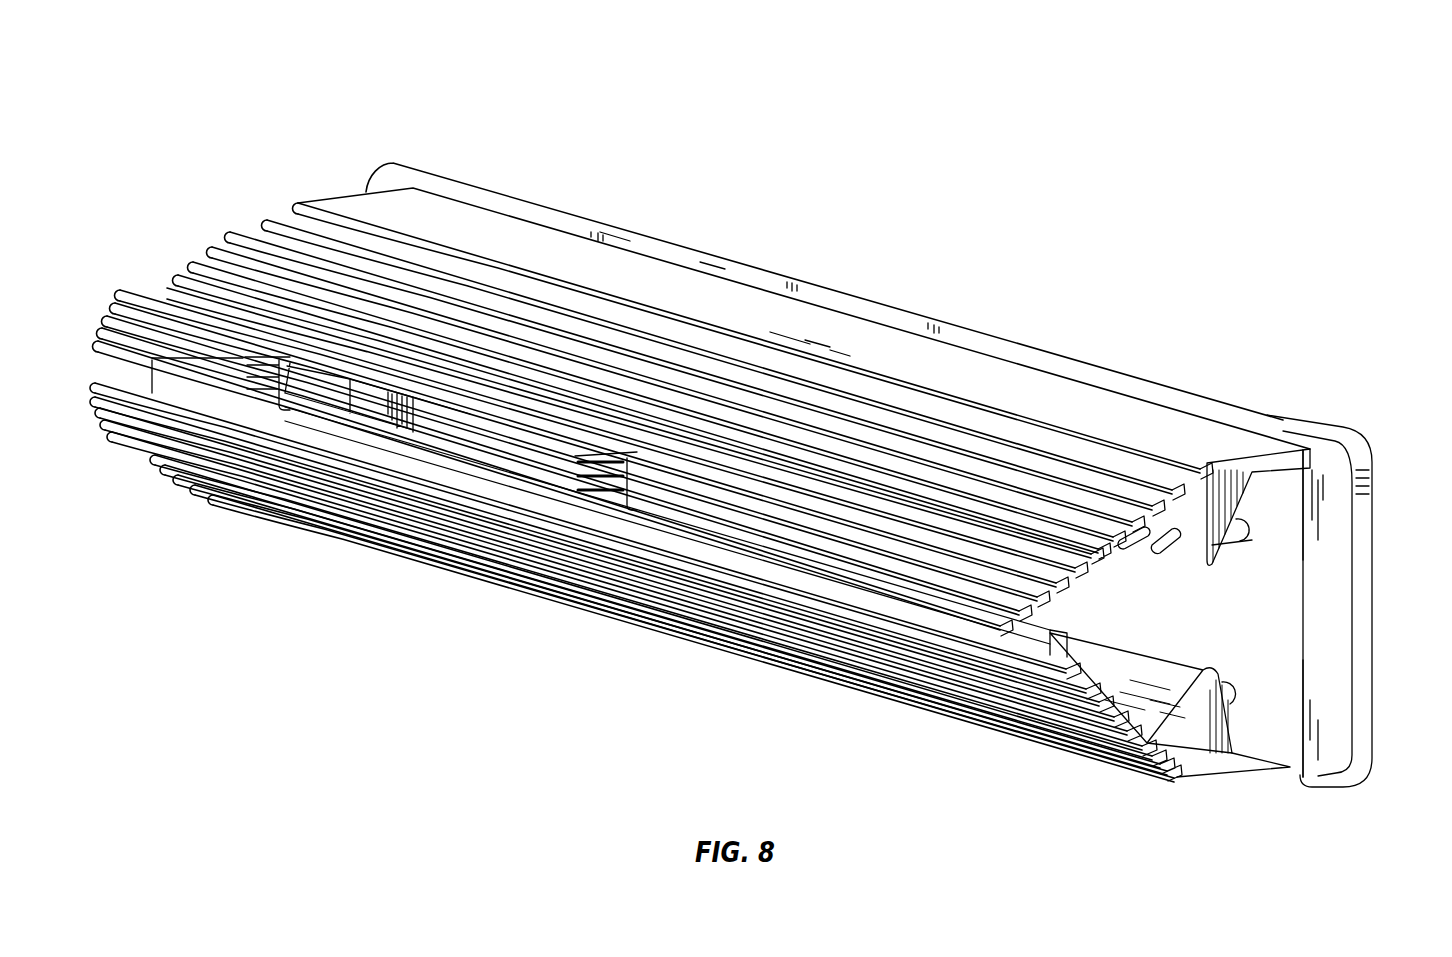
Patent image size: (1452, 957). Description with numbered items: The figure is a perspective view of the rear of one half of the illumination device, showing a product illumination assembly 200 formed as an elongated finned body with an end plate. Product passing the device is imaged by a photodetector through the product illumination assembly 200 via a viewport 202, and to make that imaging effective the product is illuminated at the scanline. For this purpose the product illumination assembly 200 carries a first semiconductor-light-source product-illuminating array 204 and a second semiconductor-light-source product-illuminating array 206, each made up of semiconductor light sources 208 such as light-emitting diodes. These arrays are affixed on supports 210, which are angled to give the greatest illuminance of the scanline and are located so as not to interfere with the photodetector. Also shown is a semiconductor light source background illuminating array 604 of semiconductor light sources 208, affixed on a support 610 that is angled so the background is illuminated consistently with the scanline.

The product illumination assembly 200 is at (1030, 90).
The viewport 202 is at (455, 427).
The first semiconductor-light-source product-illuminating array 204 is at (1273, 538).
The second semiconductor-light-source product-illuminating array 206 is at (1266, 703).
The semiconductor light sources 208 is at (1252, 528).
The supports 210 is at (1227, 547).
The semiconductor light source background illuminating array 604 is at (1168, 504).
The support 610 is at (1183, 553).